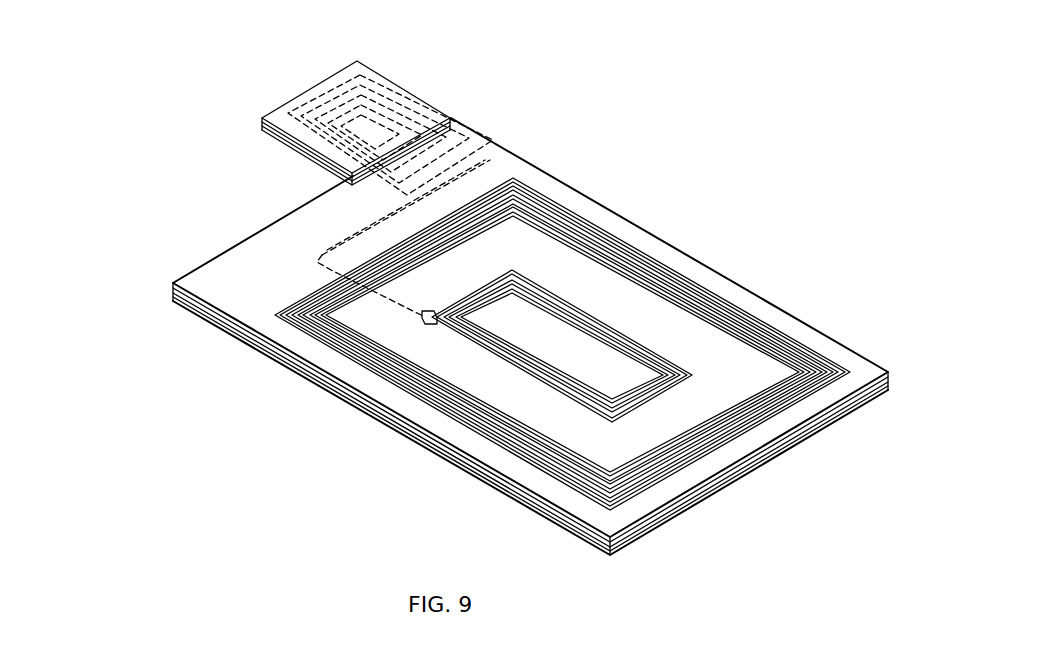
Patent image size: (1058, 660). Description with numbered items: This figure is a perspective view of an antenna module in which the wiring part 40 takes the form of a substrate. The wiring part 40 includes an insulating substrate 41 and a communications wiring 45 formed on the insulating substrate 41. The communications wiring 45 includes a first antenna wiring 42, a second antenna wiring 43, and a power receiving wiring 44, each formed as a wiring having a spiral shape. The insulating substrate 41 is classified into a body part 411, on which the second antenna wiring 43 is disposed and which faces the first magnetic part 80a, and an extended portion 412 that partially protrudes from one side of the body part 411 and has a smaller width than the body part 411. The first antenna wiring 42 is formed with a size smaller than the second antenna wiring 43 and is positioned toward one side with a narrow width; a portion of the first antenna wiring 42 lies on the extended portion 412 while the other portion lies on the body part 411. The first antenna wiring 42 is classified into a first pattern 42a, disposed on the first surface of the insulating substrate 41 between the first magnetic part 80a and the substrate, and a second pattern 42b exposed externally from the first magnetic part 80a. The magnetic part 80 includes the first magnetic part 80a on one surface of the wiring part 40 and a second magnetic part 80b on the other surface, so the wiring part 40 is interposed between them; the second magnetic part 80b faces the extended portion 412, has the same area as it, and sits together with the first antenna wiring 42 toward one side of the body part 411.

The wiring part 40 is at (781, 303).
The insulating substrate 41 is at (835, 345).
The body part 411 is at (250, 334).
The extended portion 412 is at (308, 154).
The first antenna wiring 42 is at (571, 75).
The first pattern 42a is at (483, 146).
The second pattern 42b is at (447, 115).
The second antenna wiring 43 is at (657, 266).
The power receiving wiring 44 is at (640, 350).
The communications wiring 45 is at (661, 38).
The magnetic part 80 is at (128, 406).
The first magnetic part 80a is at (195, 308).
The second magnetic part 80b is at (262, 125).